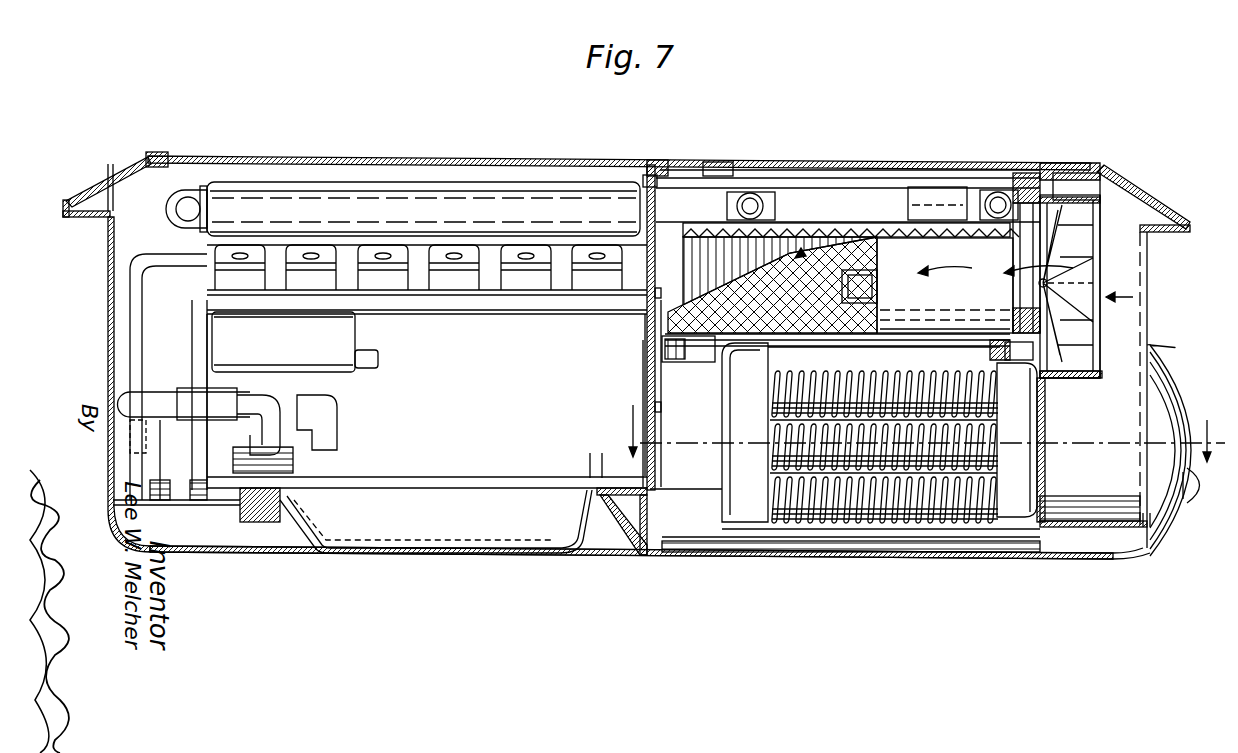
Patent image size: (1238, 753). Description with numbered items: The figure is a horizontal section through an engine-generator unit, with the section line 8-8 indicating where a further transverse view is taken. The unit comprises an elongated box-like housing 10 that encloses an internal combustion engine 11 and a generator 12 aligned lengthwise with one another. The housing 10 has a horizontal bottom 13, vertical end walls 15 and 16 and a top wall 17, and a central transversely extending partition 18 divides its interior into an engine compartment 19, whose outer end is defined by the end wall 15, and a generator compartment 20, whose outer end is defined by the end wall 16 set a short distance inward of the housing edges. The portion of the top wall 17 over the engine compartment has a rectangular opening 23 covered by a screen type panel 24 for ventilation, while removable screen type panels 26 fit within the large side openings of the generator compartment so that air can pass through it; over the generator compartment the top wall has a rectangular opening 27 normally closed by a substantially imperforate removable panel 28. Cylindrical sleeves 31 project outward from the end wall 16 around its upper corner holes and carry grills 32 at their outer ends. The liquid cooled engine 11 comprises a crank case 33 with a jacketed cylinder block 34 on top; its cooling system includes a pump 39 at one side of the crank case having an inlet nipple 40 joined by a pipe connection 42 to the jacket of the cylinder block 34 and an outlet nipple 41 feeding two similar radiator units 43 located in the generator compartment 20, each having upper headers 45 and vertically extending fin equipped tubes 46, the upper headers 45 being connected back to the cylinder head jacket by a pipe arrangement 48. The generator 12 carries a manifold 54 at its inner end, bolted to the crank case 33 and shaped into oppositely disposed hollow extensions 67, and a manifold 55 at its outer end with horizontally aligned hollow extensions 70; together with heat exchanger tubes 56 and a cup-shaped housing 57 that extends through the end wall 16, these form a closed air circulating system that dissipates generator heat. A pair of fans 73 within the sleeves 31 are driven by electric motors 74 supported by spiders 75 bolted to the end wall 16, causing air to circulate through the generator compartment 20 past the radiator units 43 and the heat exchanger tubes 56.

The section line 8- 8 is at (920, 433).
The housing 10 is at (763, 562).
The internal combustion engine 11 is at (405, 475).
The generator 12 is at (884, 364).
The bottom 13 is at (655, 560).
The end wall 15 is at (108, 320).
The end wall 16 is at (1045, 417).
The top wall 17 is at (683, 162).
The partition 18 is at (656, 252).
The engine compartment 19 is at (432, 173).
The generator compartment 20 is at (898, 178).
The rectangular opening 23 is at (165, 165).
The screen type panel 24 is at (331, 159).
The removable screen type panels 26 is at (668, 366).
The rectangular opening 27 is at (725, 162).
The removable panel 28 is at (757, 168).
The cylindrical sleeves 31 is at (1071, 382).
The grills 32 is at (1100, 335).
The crank case 33 is at (426, 396).
The cylinder block 34 is at (415, 250).
The pump 39 is at (295, 463).
The inlet nipple 40 is at (262, 432).
The outlet nipple 41 is at (340, 432).
The pipe connection 42 is at (164, 412).
The radiator units 43 is at (799, 250).
The upper headers 45 is at (946, 186).
The fin equipped tubes 46 is at (822, 235).
The pipe arrangement 48 is at (850, 249).
The manifold 54 is at (770, 347).
The manifold 55 is at (995, 354).
The heat exchanger tubes 56 is at (920, 523).
The cup-shaped housing 57 is at (1120, 450).
The hollow extensions 67 is at (735, 393).
The hollow extensions 70 is at (1013, 522).
The fans 73 is at (1085, 250).
The electric motors 74 is at (987, 285).
The spiders 75 is at (1030, 185).